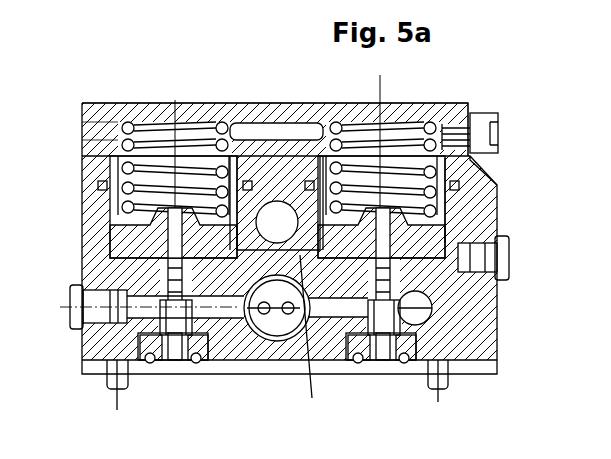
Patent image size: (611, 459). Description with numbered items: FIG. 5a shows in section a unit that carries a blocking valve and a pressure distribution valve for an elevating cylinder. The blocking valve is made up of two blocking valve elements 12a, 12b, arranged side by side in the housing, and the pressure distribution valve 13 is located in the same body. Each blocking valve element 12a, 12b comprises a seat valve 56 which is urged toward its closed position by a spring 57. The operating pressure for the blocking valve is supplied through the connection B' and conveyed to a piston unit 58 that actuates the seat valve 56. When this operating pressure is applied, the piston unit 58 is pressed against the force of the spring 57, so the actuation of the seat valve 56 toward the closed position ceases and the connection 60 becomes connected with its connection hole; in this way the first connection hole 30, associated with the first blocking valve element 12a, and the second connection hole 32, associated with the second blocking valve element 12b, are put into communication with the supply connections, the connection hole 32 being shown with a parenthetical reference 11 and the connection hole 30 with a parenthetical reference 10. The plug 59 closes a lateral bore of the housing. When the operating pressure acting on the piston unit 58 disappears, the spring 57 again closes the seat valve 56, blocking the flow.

The first blocking valve element 12a is at (445, 100).
The second blocking valve element 12b is at (170, 101).
The spring 57 is at (497, 143).
The piston unit 58 is at (448, 207).
The connection for operation of the blocking valve B' is at (436, 305).
The connection 60 is at (138, 302).
The plug 59 is at (508, 270).
The seat valve 56 is at (392, 322).
The second connection hole 32 is at (172, 352).
The valve 11 is at (173, 272).
The pressure distribution valve 13 is at (277, 318).
The first connection hole 30 is at (383, 352).
The valve 10 is at (381, 272).